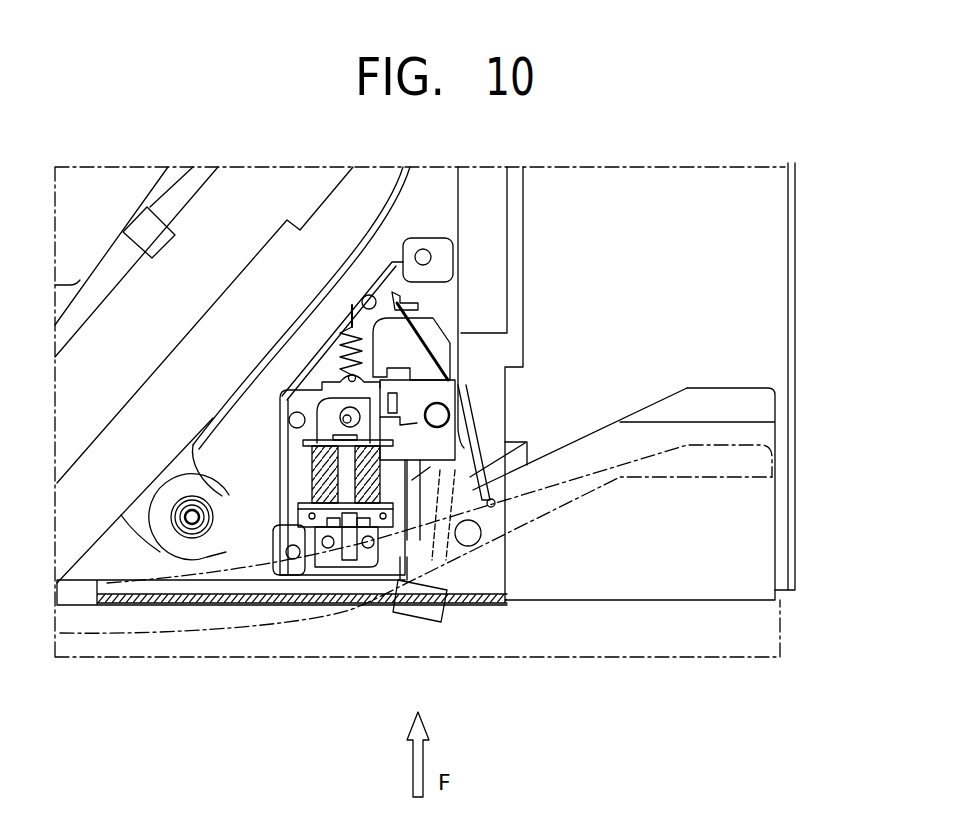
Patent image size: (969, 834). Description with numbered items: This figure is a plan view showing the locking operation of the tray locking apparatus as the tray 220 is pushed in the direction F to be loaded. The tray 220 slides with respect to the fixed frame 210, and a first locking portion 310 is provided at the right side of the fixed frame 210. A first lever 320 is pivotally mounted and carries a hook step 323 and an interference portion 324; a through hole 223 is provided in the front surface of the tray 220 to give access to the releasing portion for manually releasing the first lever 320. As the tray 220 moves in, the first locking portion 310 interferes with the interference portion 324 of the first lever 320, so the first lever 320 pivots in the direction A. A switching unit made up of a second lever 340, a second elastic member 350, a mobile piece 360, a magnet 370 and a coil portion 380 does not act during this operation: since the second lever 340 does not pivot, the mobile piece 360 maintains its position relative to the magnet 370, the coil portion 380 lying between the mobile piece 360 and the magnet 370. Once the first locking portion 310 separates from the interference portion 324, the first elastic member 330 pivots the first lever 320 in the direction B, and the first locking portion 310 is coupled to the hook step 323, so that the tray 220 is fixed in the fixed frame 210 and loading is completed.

The fixed frame 210 is at (796, 365).
The tray 220 is at (713, 600).
The through hole 223 is at (443, 603).
The first locking portion 310 is at (482, 540).
The first lever 320 is at (477, 451).
The hook step 323 is at (495, 504).
The interference portion 324 is at (526, 442).
The first elastic member 330 is at (390, 358).
The second lever 340 is at (457, 390).
The second elastic member 350 is at (352, 325).
The mobile piece 360 is at (318, 398).
The magnet 370 is at (345, 545).
The coil portion 380 is at (291, 560).